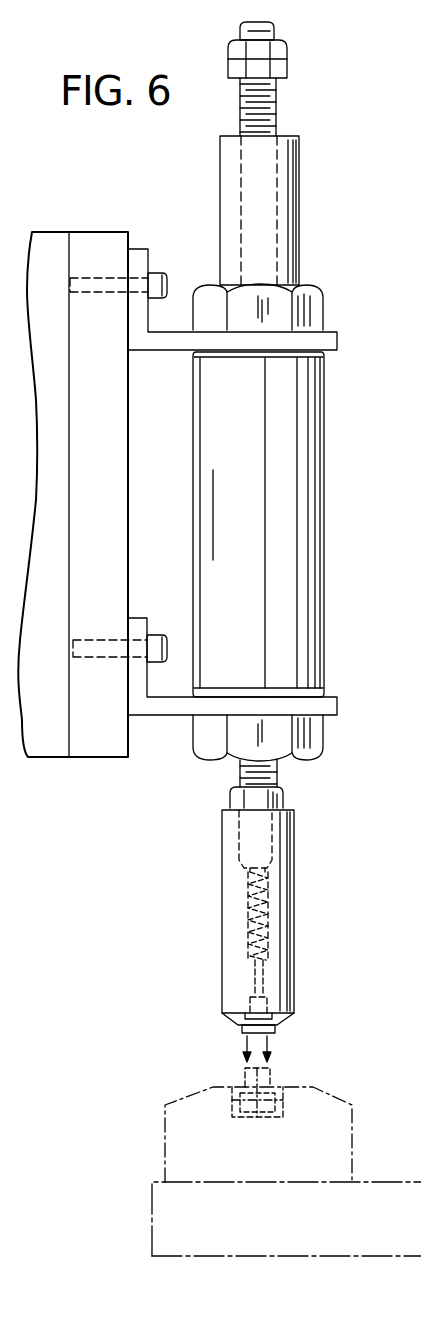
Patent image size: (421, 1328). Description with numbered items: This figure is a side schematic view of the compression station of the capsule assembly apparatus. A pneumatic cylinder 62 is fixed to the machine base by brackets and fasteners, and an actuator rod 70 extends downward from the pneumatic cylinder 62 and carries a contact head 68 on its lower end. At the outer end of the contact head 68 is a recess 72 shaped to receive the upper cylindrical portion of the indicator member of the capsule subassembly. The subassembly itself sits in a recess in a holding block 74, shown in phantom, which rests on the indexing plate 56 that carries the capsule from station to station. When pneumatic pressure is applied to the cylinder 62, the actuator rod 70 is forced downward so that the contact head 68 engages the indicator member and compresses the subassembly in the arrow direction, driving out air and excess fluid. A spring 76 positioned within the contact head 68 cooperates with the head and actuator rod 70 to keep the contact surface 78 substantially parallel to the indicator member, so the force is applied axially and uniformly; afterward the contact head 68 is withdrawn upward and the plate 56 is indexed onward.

The plate 56 is at (172, 1215).
The pneumatic cylinder 62 is at (310, 490).
The contact head 68 is at (282, 871).
The actuator rod 70 is at (277, 768).
The recess 72 is at (278, 1029).
The holding block 74 is at (185, 1128).
The spring 76 is at (268, 928).
The contact surface 78 is at (252, 1031).